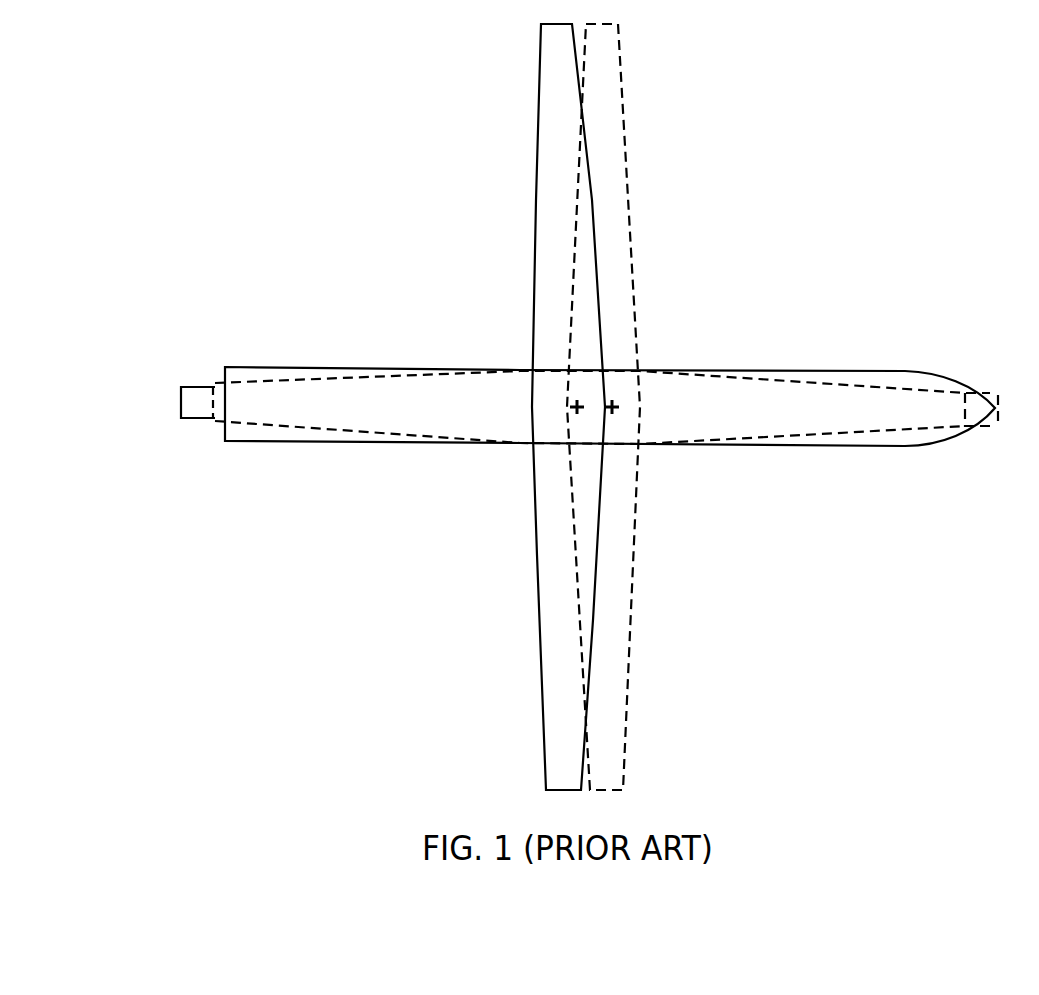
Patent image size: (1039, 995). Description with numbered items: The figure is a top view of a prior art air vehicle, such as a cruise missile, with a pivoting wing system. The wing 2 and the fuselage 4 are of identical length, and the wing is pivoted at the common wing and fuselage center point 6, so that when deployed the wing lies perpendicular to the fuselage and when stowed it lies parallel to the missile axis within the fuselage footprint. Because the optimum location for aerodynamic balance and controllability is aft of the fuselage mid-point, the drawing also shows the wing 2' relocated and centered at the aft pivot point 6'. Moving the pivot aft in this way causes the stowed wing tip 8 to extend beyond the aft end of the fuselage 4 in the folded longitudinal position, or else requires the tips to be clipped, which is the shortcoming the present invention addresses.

The wing 2 is at (637, 407).
The wing (aft-centered position) 2' is at (534, 407).
The fuselage 4 is at (415, 368).
The wing and fuselage center point 6 is at (657, 368).
The aft pivot point 6' is at (524, 361).
The stowed wing tip 8 is at (191, 387).